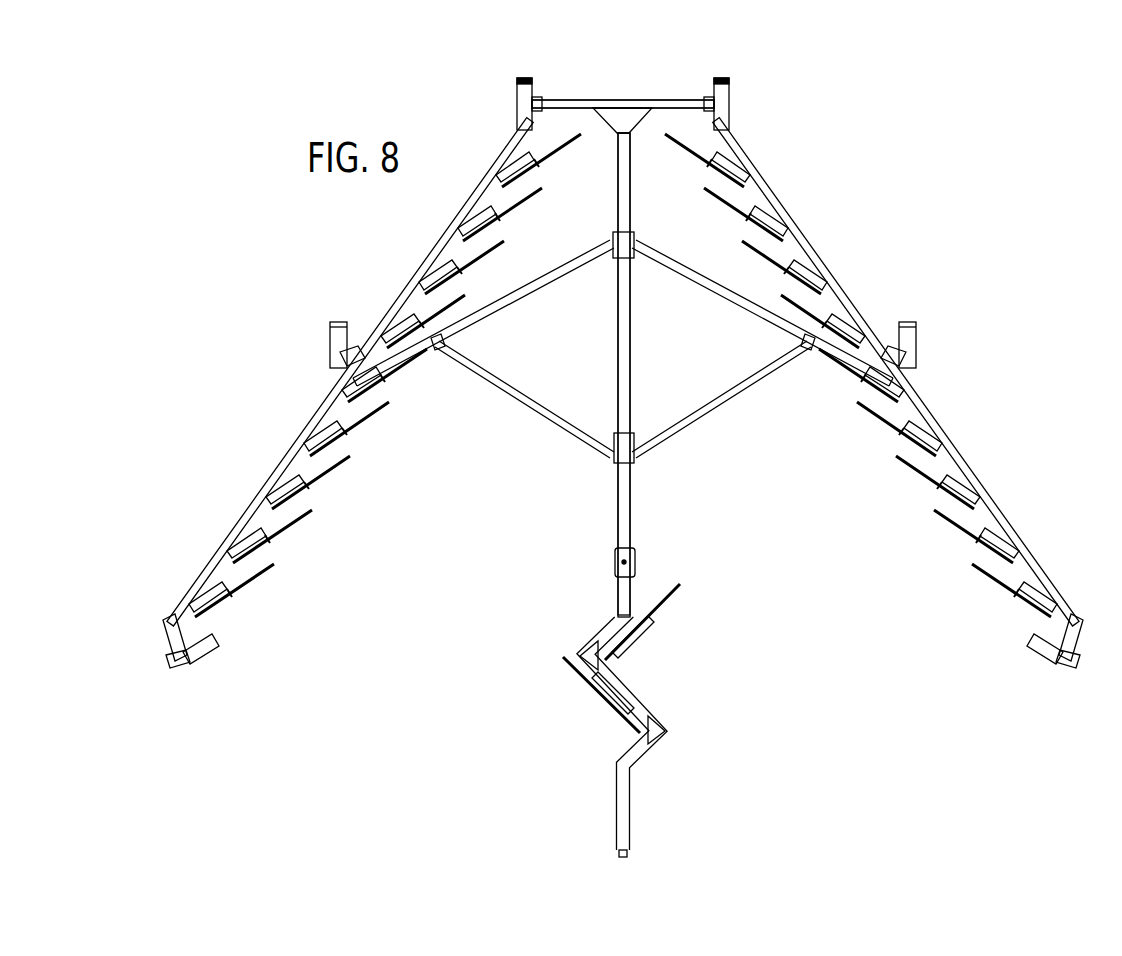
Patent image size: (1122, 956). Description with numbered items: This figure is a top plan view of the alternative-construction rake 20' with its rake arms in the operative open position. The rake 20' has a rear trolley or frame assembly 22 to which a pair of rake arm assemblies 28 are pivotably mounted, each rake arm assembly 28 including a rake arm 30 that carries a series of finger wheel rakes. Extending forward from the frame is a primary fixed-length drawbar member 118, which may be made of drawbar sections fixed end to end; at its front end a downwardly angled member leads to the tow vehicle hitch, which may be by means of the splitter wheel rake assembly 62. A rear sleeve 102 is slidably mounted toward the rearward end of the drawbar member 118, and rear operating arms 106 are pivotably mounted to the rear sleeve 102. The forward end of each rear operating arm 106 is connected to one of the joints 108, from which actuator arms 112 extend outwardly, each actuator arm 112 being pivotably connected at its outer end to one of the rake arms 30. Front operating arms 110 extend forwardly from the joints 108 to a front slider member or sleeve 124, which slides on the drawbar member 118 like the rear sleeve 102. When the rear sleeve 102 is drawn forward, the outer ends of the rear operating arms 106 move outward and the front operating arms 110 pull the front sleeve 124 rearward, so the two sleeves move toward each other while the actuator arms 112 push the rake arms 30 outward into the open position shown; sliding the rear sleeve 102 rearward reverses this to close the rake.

The rake 20' is at (774, 357).
The rear trolley or frame assembly 22 is at (680, 86).
The rake arm assembly 28 is at (250, 417).
The rake arm 30 is at (447, 228).
The splitter wheel rake assembly 62 is at (572, 730).
The rear sleeve 102 is at (627, 232).
The rear operating arm 106 is at (510, 290).
The joint 108 is at (433, 362).
The front operating arm 110 is at (532, 403).
The actuator arm 112 is at (378, 328).
The primary fixed-length drawbar member 118 is at (617, 348).
The front slider member or sleeve 124 is at (620, 467).